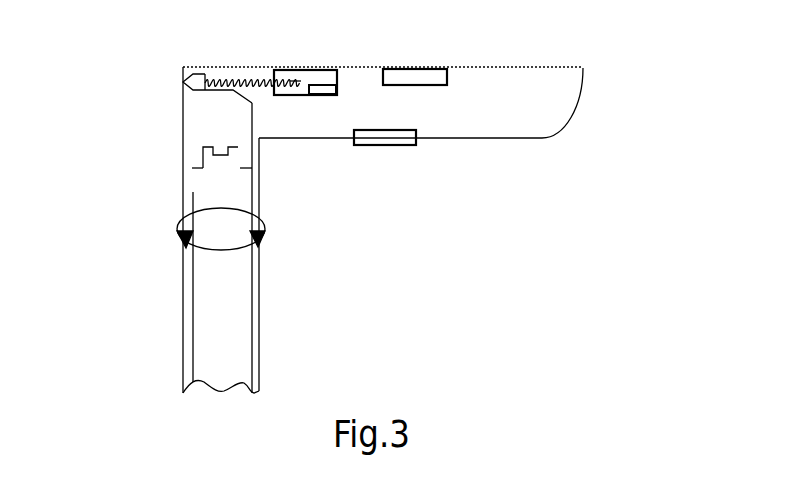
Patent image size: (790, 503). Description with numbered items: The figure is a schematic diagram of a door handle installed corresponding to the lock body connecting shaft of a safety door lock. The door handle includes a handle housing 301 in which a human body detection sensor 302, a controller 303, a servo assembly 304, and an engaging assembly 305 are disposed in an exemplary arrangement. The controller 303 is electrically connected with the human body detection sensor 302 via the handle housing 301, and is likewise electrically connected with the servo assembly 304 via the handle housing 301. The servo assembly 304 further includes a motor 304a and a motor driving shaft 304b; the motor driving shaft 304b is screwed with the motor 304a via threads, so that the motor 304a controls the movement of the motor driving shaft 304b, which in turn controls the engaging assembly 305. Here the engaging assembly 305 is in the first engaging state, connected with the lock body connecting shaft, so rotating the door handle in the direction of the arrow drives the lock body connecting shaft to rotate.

The handle housing 301 is at (565, 125).
The human body detection sensor 302 is at (410, 147).
The controller 303 is at (422, 67).
The servo assembly 304 is at (300, 70).
The motor 304a is at (233, 52).
The motor driving shaft 304b is at (325, 88).
The engaging assembly 305 is at (193, 100).